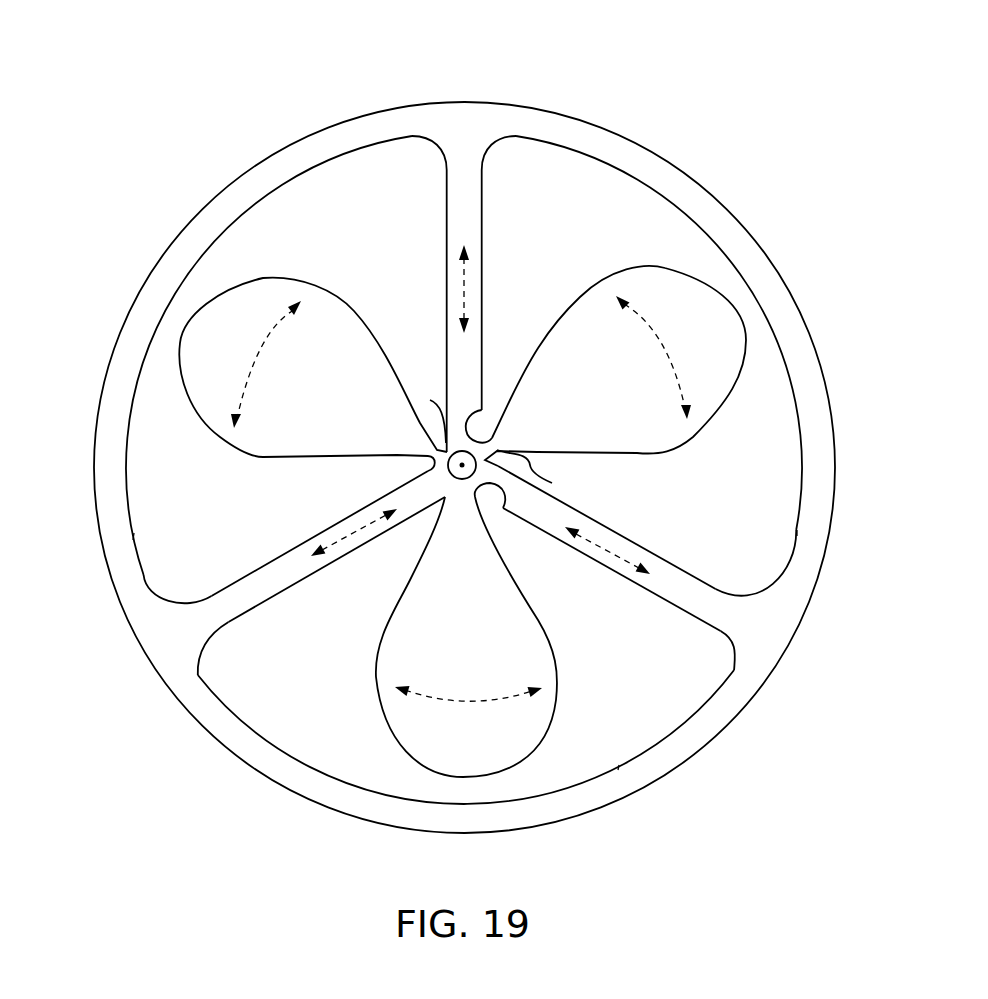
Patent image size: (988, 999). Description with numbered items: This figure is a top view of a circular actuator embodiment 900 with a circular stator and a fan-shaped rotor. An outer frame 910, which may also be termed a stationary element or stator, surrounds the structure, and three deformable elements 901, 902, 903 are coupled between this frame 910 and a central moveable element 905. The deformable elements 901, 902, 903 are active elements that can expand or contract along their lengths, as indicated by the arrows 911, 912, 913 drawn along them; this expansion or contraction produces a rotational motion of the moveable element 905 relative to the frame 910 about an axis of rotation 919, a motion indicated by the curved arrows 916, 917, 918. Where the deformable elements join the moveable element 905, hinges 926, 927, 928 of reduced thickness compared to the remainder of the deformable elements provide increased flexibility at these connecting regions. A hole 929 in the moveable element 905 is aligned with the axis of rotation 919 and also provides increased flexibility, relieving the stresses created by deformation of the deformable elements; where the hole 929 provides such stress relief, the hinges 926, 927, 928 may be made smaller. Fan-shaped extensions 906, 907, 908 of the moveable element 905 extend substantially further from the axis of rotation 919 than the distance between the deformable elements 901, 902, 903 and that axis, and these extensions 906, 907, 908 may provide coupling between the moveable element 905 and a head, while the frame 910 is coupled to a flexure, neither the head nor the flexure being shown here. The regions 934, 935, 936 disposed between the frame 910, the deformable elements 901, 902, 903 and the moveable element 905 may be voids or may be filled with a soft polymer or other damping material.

The circular actuator embodiment 900 is at (170, 82).
The frame 910 is at (717, 200).
The deformable element 901 is at (446, 238).
The deformable element 902 is at (650, 549).
The deformable element 903 is at (287, 589).
The moveable element 905 is at (552, 483).
The fan-shaped extension 906 is at (260, 457).
The fan-shaped extension 907 is at (580, 297).
The fan-shaped extension 908 is at (556, 665).
The arrow 911 is at (457, 290).
The arrow 912 is at (600, 562).
The arrow 913 is at (357, 538).
The arrow 916 is at (253, 350).
The arrow 917 is at (660, 343).
The arrow 918 is at (468, 692).
The axis of rotation 919 is at (424, 410).
The hinge 926 is at (403, 467).
The hinge 927 is at (482, 428).
The hinge 928 is at (503, 520).
The hole 929 is at (462, 465).
The region 934 is at (133, 536).
The region 935 is at (797, 530).
The region 936 is at (619, 765).